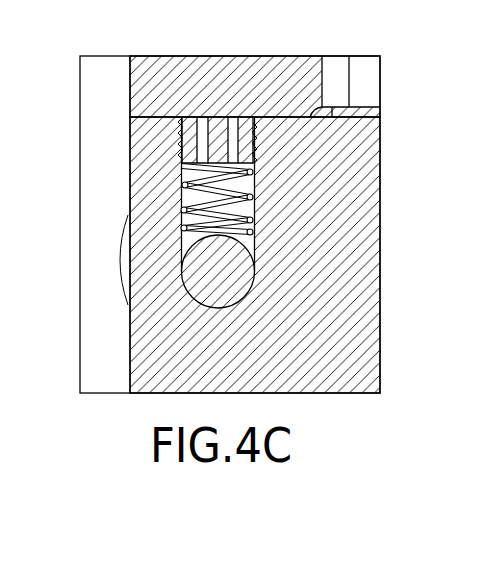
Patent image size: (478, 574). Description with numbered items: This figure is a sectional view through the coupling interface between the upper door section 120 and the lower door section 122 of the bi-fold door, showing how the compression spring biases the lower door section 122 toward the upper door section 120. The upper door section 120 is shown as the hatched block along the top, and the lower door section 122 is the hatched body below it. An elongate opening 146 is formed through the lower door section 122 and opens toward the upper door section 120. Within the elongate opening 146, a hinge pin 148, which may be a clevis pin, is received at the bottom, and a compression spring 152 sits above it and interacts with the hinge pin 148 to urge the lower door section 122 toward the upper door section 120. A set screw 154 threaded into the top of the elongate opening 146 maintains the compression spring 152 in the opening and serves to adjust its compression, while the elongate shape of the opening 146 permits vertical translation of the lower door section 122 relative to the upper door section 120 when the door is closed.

The upper door section 120 is at (283, 72).
The lower door section 122 is at (357, 333).
The elongate opening 146 is at (257, 210).
The hinge pin 148 is at (194, 272).
The compression spring 152 is at (183, 207).
The set screw 154 is at (182, 150).